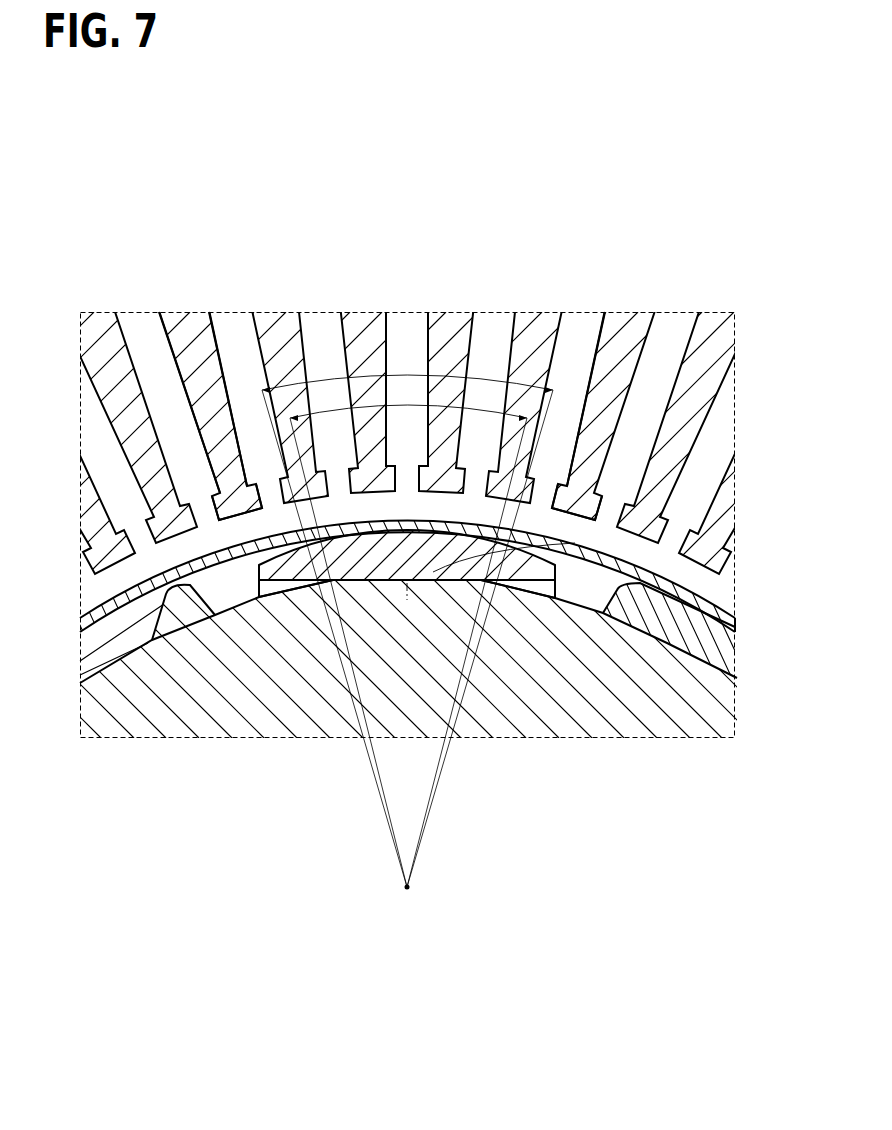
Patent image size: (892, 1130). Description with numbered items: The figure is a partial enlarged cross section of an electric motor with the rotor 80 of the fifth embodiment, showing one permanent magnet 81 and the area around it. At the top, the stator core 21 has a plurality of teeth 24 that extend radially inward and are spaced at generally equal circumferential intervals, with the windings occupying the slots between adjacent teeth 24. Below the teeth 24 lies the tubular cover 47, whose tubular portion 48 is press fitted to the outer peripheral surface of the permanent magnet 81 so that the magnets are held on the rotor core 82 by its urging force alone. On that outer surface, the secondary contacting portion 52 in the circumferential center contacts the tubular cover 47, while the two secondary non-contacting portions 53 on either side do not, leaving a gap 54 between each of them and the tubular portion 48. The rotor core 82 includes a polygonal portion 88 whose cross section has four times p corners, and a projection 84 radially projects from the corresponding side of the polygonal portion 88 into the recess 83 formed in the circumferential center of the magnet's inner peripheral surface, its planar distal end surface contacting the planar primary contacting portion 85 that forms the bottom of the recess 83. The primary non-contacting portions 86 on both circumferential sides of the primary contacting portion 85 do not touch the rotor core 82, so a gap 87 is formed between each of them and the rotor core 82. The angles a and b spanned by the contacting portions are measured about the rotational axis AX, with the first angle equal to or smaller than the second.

The stator core 21 is at (446, 400).
The teeth 24 is at (205, 410).
The secondary contacting portion 52 is at (428, 532).
The secondary non-contacting portions 53 is at (520, 525).
The gap 54 is at (628, 545).
The rotor 80 is at (443, 500).
The permanent magnet 81 is at (387, 560).
The rotor core 82 is at (443, 658).
The recess 83 is at (340, 583).
The projection 84 is at (690, 640).
The primary contacting portion 85 is at (407, 583).
The primary non-contacting portions 86 is at (522, 592).
The gap 87 is at (553, 598).
The polygonal portion 88 is at (635, 690).
The tubular cover 47 is at (684, 572).
The tubular portion 48 is at (738, 606).
The rotational axis AX is at (412, 889).